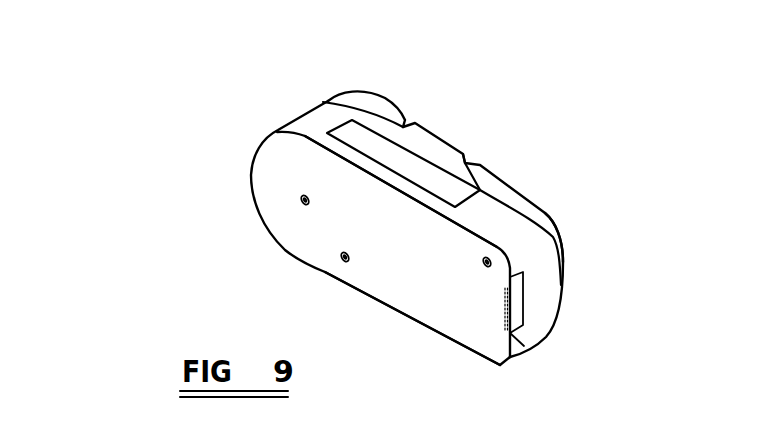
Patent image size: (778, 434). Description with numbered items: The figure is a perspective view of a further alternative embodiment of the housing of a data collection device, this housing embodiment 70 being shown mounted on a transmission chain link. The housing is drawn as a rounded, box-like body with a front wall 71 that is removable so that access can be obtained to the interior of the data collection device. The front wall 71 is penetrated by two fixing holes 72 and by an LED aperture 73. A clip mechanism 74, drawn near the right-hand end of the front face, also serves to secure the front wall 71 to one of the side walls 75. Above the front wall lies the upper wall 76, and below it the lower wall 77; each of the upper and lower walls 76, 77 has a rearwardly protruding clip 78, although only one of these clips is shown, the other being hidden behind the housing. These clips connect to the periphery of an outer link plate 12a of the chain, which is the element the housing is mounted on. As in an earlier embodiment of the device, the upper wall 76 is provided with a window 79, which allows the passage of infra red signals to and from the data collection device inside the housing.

The housing embodiment 70 is at (222, 125).
The outer link plate 12a is at (362, 103).
The front wall 71 is at (418, 270).
The fixing holes 72 is at (340, 257).
The LED aperture 73 is at (302, 195).
The clip mechanism 74 is at (541, 353).
The side wall 75 is at (547, 322).
The upper wall 76 is at (513, 220).
The lower wall 77 is at (427, 331).
The rearwardly protruding clip 78 is at (447, 185).
The window 79 is at (448, 187).